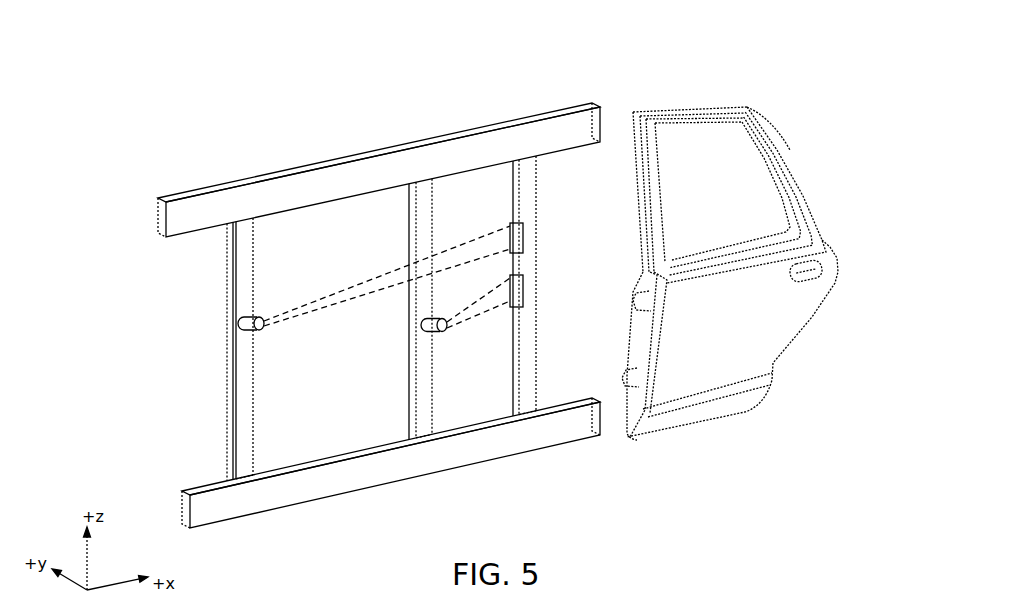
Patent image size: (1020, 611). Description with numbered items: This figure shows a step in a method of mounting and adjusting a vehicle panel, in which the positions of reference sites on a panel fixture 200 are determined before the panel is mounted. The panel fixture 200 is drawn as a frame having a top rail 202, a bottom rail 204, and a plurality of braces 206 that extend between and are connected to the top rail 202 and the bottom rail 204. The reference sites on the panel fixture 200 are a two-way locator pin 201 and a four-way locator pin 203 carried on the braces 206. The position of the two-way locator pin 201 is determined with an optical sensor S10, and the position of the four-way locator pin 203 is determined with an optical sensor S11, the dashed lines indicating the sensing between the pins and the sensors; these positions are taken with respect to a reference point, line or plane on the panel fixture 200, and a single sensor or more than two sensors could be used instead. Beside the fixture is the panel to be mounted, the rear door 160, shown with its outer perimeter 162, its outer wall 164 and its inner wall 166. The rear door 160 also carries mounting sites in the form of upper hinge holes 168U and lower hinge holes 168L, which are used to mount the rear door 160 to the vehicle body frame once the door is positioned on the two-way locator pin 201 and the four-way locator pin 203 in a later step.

The panel fixture 200 is at (369, 342).
The top rail 202 is at (205, 198).
The bottom rail 204 is at (228, 510).
The braces 206 is at (242, 430).
The 4-way locator pin 203 is at (252, 321).
The 2-way locator pin 201 is at (428, 323).
The optical sensor S10 is at (513, 238).
The optical sensor S11 is at (522, 296).
The rear door 160 is at (706, 286).
The outer perimeter 162 is at (683, 107).
The outer wall 164 is at (750, 117).
The inner wall 166 is at (642, 268).
The upper hinge holes 168U is at (632, 297).
The lower hinge holes 168L is at (630, 386).